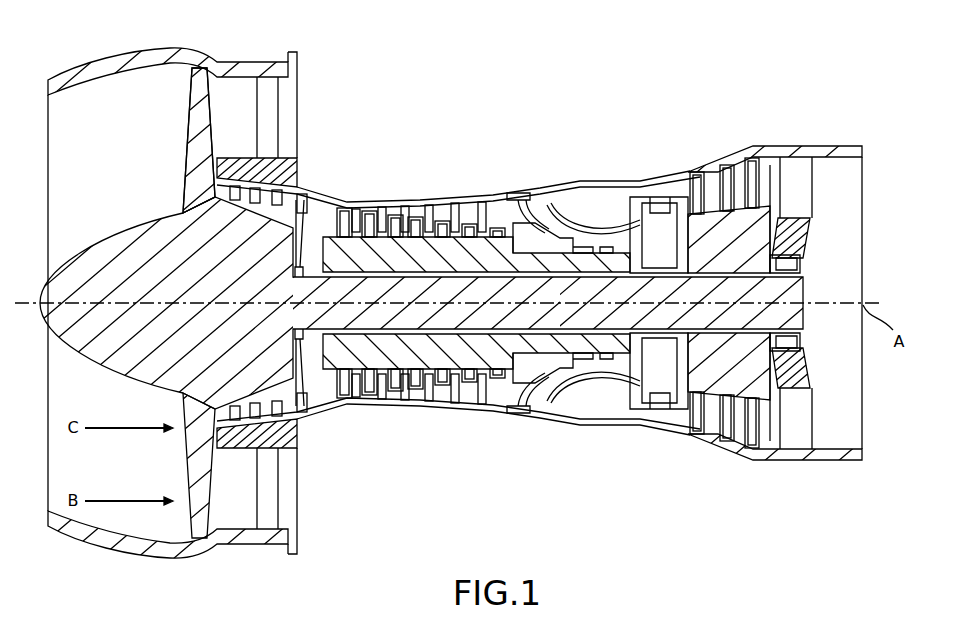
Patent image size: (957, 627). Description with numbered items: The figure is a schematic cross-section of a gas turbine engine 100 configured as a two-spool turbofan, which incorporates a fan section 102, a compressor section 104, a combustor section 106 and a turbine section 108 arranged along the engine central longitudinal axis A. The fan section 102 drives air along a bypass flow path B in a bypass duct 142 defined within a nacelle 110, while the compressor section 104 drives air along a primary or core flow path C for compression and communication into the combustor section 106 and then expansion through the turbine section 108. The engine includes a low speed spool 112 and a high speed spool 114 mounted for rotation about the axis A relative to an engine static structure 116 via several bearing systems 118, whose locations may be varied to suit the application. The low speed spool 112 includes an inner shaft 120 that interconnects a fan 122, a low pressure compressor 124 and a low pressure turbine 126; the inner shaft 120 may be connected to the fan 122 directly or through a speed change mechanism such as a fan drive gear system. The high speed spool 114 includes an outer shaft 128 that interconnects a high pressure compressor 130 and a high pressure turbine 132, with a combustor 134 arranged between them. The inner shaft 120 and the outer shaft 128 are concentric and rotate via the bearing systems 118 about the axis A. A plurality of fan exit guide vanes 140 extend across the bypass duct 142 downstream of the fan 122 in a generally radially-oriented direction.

The gas turbine engine 100 is at (346, 96).
The fan section 102 is at (170, 127).
The compressor section 104 is at (373, 185).
The combustor section 106 is at (569, 179).
The turbine section 108 is at (711, 154).
The nacelle 110 is at (105, 547).
The low speed spool 112 is at (723, 372).
The high speed spool 114 is at (667, 237).
The engine static structure 116 is at (790, 455).
The bearing systems 118 is at (790, 263).
The inner shaft 120 is at (404, 315).
The fan 122 is at (193, 162).
The low pressure compressor 124 is at (263, 388).
The low pressure turbine 126 is at (740, 397).
The outer shaft 128 is at (484, 347).
The high pressure compressor 130 is at (427, 372).
The high pressure turbine 132 is at (662, 378).
The combustor 134 is at (577, 390).
The fan exit guide vanes 140 is at (266, 519).
The bypass duct 142 is at (227, 97).